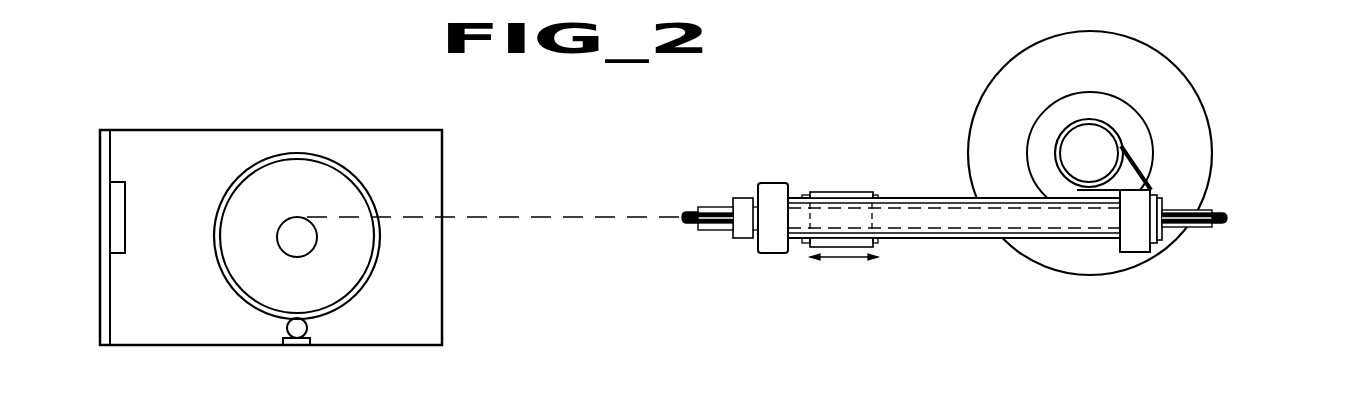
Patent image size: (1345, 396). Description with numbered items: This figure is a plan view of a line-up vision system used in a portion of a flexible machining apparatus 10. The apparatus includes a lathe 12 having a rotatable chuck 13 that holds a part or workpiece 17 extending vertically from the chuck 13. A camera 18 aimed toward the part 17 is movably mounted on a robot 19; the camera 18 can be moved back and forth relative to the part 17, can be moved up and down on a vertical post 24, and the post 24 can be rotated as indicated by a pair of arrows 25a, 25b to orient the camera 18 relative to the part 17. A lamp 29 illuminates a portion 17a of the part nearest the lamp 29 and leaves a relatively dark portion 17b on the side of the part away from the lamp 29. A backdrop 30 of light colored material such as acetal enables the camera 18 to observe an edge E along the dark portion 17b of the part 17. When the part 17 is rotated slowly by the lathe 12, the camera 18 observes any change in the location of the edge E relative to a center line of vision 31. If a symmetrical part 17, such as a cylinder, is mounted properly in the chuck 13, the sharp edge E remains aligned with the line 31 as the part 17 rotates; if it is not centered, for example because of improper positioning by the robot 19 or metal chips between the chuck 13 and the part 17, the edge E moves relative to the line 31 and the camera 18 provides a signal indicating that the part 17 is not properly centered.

The flexible machining apparatus 10 is at (996, 163).
The lathe 12 is at (430, 302).
The rotatable chuck 13 is at (223, 263).
The part or workpiece 17 is at (283, 240).
The illuminated portion 17a is at (297, 257).
The dark portion 17b is at (300, 217).
The edge E is at (300, 217).
The camera 18 is at (828, 192).
The robot 19 is at (952, 247).
The vertical post 24 is at (1083, 130).
The arrow 25a is at (1046, 146).
The arrow 25b is at (1133, 146).
The lamp 29 is at (287, 328).
The backdrop 30 is at (125, 196).
The center line of vision 31 is at (558, 213).